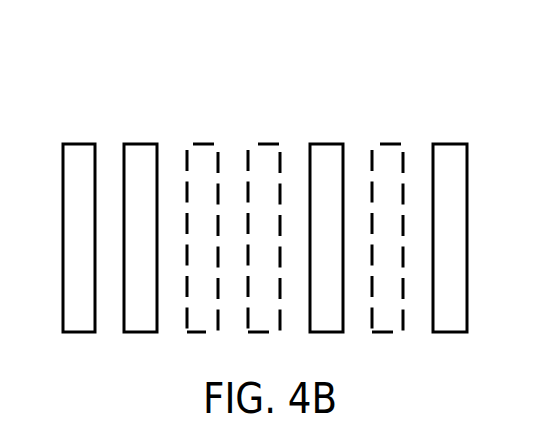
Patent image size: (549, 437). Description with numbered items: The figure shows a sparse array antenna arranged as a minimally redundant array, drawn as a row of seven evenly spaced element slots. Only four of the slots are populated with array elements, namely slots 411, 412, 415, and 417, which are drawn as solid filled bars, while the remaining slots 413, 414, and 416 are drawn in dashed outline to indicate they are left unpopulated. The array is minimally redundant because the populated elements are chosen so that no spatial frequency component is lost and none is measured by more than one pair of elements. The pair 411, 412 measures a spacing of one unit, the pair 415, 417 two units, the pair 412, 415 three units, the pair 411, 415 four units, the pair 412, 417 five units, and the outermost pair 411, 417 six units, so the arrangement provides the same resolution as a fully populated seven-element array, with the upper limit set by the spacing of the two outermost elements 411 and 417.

The slot 411 is at (76, 193).
The slot 412 is at (146, 171).
The first dashed (removed) electrode bar 413 is at (206, 195).
The second dashed (removed) electrode bar 414 is at (257, 168).
The slot 415 is at (318, 193).
The third dashed (removed) electrode bar 416 is at (381, 174).
The slot 417 is at (443, 193).